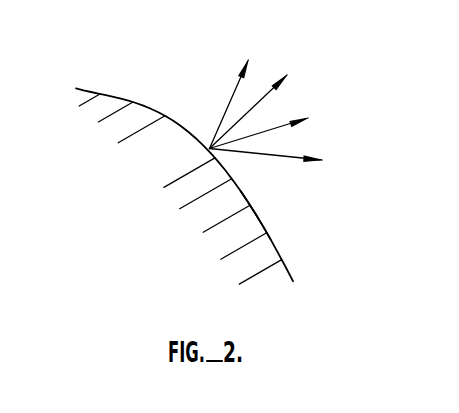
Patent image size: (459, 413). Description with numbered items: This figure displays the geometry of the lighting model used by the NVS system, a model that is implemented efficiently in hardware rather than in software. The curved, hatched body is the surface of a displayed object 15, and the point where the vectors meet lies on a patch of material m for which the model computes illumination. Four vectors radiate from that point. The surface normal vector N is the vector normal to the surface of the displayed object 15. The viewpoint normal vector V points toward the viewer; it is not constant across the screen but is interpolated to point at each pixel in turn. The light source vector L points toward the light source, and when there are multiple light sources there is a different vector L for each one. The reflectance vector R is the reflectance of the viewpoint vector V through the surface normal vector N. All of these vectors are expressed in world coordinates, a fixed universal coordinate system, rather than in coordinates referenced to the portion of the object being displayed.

The displayed object 15 is at (142, 222).
The patch of material m is at (260, 215).
The reflectance vector R is at (235, 93).
The surface normal vector N is at (256, 105).
The light source vector L is at (267, 130).
The viewpoint normal vector V is at (275, 160).